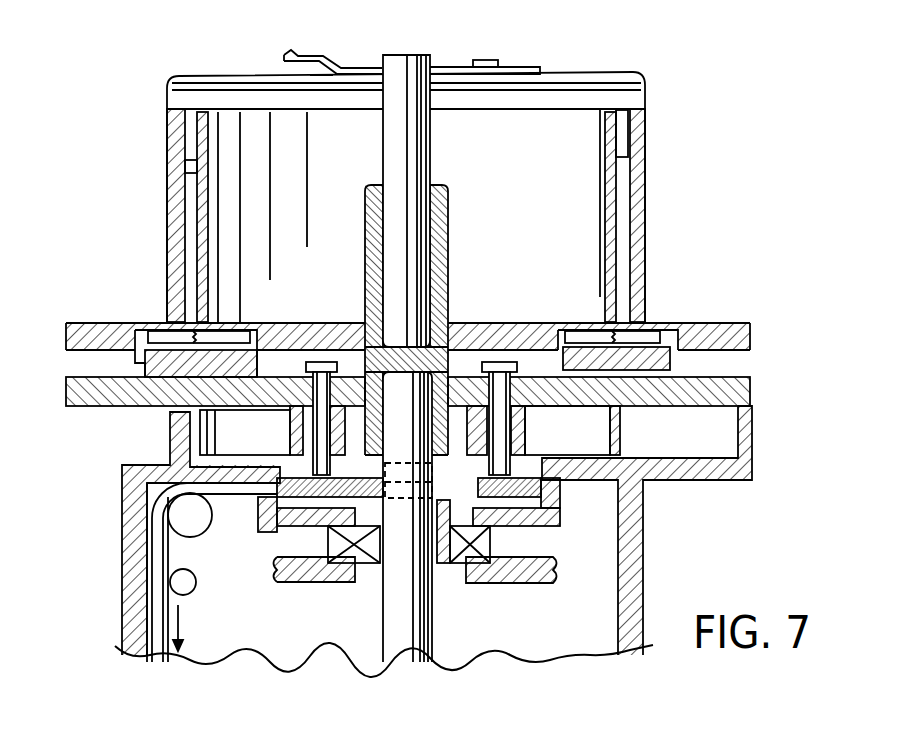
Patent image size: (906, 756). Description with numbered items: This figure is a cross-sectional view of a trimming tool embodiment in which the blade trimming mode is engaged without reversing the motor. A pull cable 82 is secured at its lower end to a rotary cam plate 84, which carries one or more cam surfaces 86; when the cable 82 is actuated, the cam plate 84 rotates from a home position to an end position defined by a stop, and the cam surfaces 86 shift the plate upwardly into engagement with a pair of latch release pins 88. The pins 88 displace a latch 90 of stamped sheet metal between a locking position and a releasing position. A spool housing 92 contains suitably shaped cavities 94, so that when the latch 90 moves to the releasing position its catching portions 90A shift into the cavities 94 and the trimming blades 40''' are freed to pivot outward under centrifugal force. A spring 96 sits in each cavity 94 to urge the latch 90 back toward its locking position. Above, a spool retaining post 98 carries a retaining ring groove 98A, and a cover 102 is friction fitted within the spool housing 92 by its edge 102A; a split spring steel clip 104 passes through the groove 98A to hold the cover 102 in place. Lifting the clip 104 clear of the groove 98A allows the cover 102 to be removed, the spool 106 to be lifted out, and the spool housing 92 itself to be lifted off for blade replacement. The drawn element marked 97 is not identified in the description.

The split spring steel clip 104 is at (310, 62).
The retaining ring groove 98A is at (381, 56).
The spool retaining post 98 is at (406, 110).
The cover 102 is at (600, 73).
The edge 102A is at (190, 135).
The spool 106 is at (200, 180).
The cavities 94 is at (166, 323).
The spool housing 92 is at (648, 143).
The spring 96 is at (235, 330).
The catching portions 90A is at (133, 356).
The trimming blades 40''' is at (451, 315).
The latch release pins 88 is at (516, 330).
The latch 90 is at (698, 323).
The pull cable 82 is at (160, 607).
The cam surfaces 86 is at (303, 505).
The coupling 97 is at (363, 468).
The rotary cam plate 84 is at (447, 490).